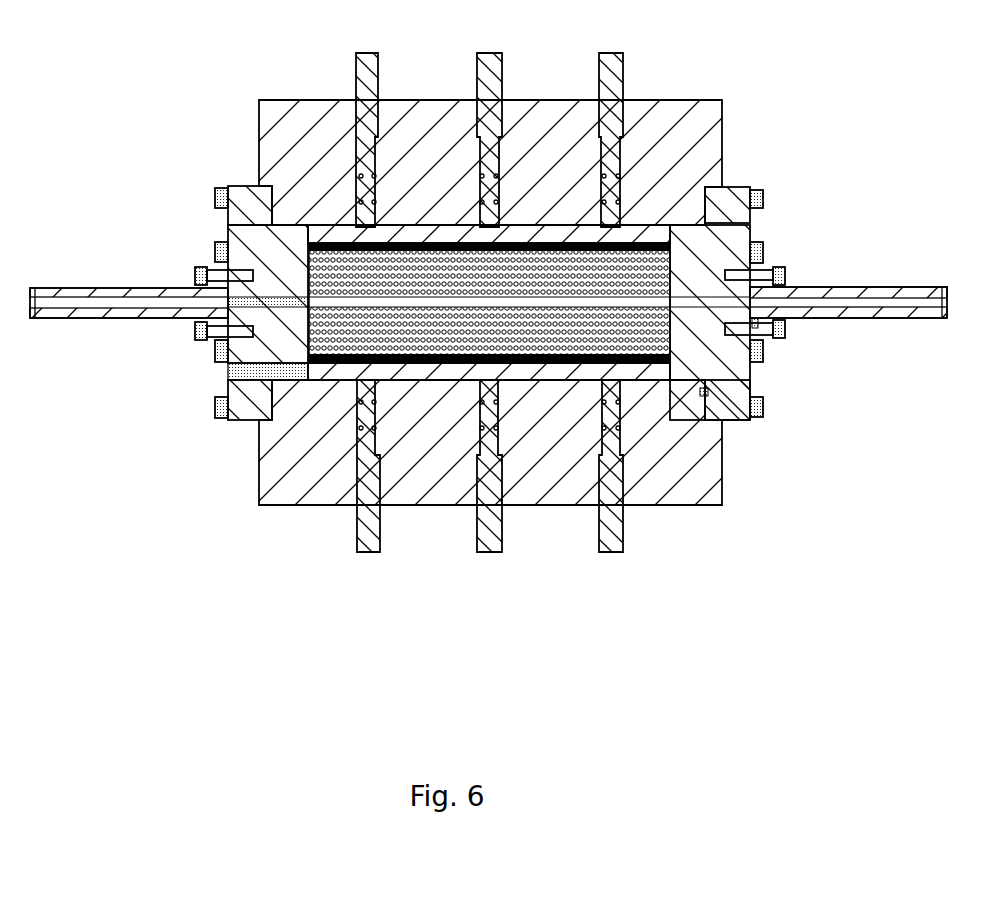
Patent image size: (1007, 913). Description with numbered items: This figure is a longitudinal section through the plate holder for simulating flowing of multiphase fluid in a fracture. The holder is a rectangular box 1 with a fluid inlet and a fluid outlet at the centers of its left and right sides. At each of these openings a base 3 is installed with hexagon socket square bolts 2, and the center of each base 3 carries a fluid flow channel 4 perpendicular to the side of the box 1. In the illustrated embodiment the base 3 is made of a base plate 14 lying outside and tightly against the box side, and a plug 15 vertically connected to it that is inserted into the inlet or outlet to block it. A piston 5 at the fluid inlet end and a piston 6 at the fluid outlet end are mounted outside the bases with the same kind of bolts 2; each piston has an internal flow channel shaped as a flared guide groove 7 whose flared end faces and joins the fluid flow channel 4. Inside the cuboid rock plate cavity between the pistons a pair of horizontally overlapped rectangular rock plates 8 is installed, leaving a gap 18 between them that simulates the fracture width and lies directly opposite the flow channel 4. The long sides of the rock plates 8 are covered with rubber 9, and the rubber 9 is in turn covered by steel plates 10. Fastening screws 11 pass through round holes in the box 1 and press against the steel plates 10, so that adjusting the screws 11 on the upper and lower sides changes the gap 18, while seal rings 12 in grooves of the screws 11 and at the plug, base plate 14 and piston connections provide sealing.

The rectangular box 1 is at (263, 112).
The hexagon socket square bolt 2 is at (217, 195).
The base 3 is at (242, 237).
The fluid flow channel 4 is at (250, 302).
The piston at the fluid inlet end 5 is at (62, 290).
The piston at the fluid outlet end 6 is at (867, 288).
The flared guide groove 7 is at (98, 302).
The rectangular rock plate 8 is at (443, 247).
The rubber 9 is at (418, 243).
The steel plate 10 is at (398, 227).
The fastening screw 11 is at (362, 63).
The seal ring 12 is at (360, 177).
The base plate 14 is at (728, 227).
The plug 15 is at (675, 239).
The gap 18 is at (252, 360).